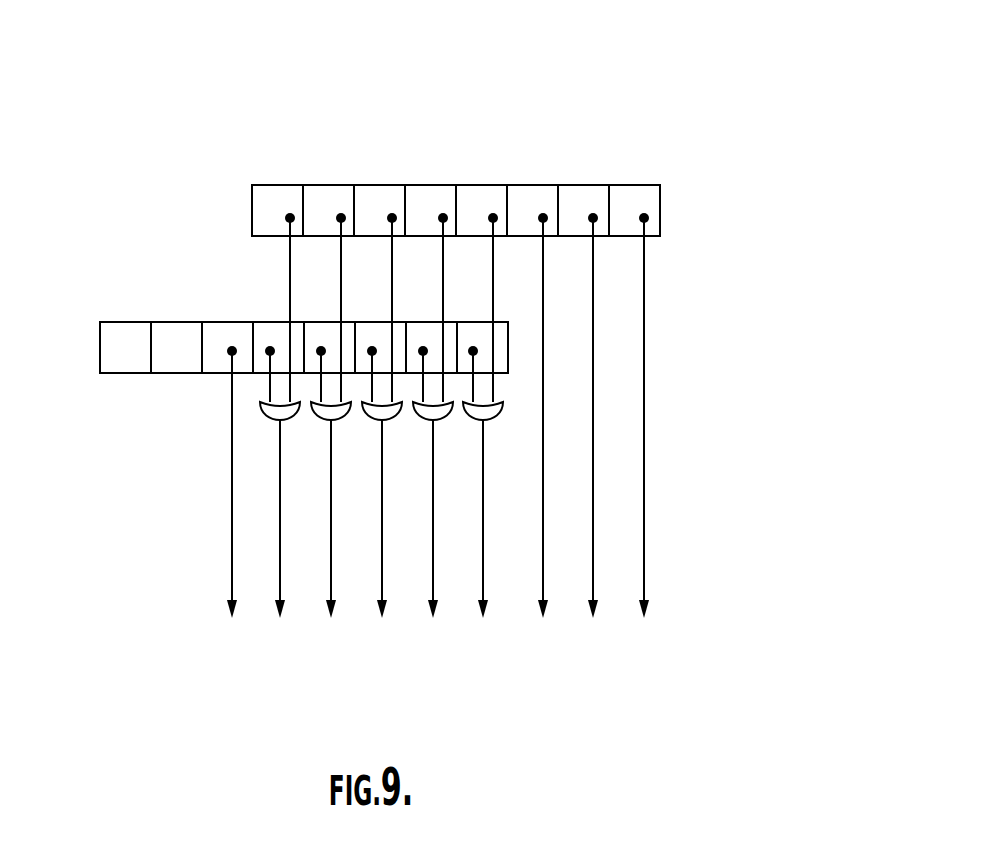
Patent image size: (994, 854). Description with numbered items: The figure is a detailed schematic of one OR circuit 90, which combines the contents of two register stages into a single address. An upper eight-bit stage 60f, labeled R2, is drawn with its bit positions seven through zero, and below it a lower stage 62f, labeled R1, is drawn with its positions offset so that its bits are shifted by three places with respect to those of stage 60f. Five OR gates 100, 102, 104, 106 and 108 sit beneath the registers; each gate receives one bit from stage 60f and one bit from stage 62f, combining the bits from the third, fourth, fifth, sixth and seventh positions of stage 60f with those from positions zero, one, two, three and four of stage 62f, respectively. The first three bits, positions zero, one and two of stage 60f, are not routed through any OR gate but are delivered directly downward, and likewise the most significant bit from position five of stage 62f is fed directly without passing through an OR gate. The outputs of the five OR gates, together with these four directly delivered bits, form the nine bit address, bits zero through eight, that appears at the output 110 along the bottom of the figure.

The OR circuit 90 is at (674, 39).
The stage 60f is at (676, 190).
The stage 62f is at (522, 334).
The OR gate 100 is at (267, 418).
The OR gate 102 is at (318, 418).
The OR gate 104 is at (369, 418).
The OR gate 106 is at (420, 418).
The OR gate 108 is at (470, 418).
The output 110 is at (676, 631).